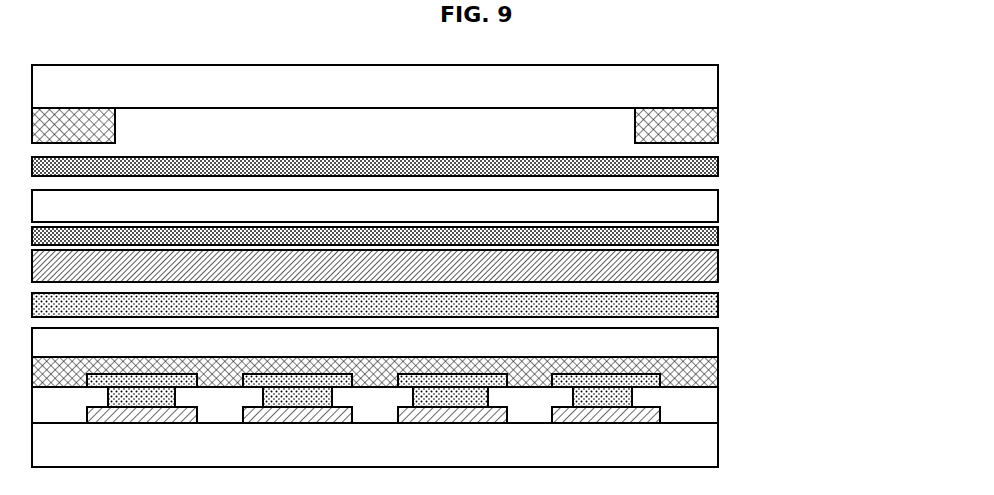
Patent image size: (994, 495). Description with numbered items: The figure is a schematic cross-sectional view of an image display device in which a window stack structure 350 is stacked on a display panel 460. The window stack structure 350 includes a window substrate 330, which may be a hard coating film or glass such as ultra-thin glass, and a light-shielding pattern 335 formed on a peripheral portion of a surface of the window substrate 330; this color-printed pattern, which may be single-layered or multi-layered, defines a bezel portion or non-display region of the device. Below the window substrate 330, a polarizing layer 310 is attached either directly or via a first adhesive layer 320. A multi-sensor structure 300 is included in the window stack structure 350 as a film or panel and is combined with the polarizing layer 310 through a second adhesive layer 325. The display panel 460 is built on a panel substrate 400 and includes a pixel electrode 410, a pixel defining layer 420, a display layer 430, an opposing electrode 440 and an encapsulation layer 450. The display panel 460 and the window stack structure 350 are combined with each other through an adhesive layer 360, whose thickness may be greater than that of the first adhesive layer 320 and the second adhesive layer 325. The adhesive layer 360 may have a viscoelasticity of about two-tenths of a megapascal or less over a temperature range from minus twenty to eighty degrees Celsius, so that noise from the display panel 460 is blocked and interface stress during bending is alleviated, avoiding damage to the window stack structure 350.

The multi-sensor structure 300 is at (435, 266).
The polarizing layer 310 is at (712, 205).
The first adhesive layer 320 is at (719, 167).
The second adhesive layer 325 is at (719, 237).
The window substrate 330 is at (707, 89).
The light-shielding pattern 335 is at (719, 127).
The window stack structure 350 is at (472, 173).
The adhesive layer 360 is at (719, 296).
The panel substrate 400 is at (708, 446).
The pixel electrode 410 is at (655, 421).
The pixel defining layer 420 is at (463, 408).
The display layer 430 is at (640, 385).
The opposing electrode 440 is at (719, 357).
The encapsulation layer 450 is at (703, 341).
The display panel 460 is at (470, 383).